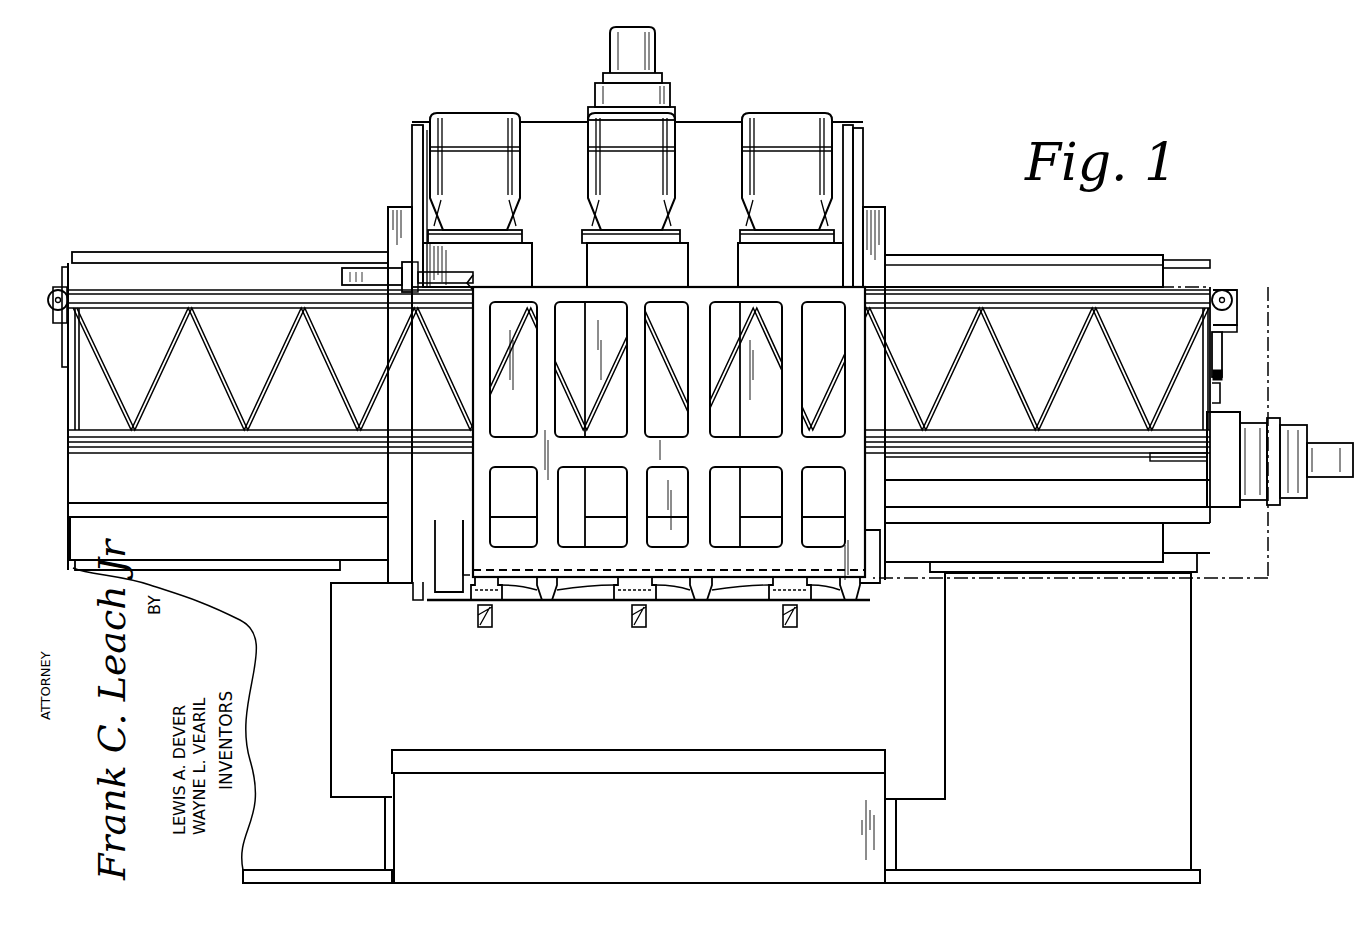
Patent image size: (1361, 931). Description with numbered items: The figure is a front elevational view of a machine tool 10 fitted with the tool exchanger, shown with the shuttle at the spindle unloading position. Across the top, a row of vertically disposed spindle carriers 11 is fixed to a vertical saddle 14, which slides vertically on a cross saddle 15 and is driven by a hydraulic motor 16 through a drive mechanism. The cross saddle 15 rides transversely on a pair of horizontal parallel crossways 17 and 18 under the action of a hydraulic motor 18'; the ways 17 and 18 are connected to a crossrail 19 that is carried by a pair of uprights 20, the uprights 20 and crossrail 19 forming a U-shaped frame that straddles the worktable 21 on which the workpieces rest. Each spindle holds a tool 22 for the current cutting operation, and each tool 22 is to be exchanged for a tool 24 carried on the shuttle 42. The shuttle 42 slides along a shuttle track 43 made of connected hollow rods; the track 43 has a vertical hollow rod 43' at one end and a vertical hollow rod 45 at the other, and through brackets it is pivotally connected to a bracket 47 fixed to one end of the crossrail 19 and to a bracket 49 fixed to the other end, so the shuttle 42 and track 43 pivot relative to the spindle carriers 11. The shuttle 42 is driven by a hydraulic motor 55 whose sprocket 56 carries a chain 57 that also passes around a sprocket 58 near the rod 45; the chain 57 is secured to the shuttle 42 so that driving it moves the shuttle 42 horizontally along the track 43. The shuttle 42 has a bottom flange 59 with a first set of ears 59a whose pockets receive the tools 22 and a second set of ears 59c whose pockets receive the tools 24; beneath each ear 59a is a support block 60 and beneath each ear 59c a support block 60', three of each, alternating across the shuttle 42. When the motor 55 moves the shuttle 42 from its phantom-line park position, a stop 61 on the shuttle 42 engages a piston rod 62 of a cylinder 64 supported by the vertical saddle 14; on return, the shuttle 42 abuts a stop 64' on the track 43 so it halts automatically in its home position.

The machine tool 10 is at (1102, 247).
The spindle carrier 11 is at (462, 118).
The vertical saddle 14 is at (546, 119).
The cross saddle 15 is at (888, 221).
The hydraulic motor 16 is at (612, 47).
The crossway 17 is at (938, 256).
The crossway 18 is at (1041, 547).
The hydraulic motor 18' is at (1296, 475).
The crossrail 19 is at (1195, 262).
The upright 20 is at (333, 665).
The worktable 21 is at (790, 750).
The tool 22 is at (486, 628).
The tool 24 is at (535, 603).
The shuttle 42 is at (559, 284).
The shuttle track 43 is at (1232, 374).
The vertical hollow rod 43' is at (1231, 445).
The vertical hollow rod 45 is at (72, 410).
The bracket 47 is at (1222, 347).
The bracket 49 is at (63, 350).
The hydraulic motor 55 is at (1235, 302).
The sprocket 56 is at (1224, 290).
The chain 57 is at (1230, 328).
The sprocket 58 is at (52, 288).
The bottom flange 59 is at (527, 570).
The ear 59a is at (493, 570).
The ear 59c is at (870, 565).
The support block 60 is at (624, 615).
The support block 60' is at (716, 609).
The stop 61 is at (477, 280).
The piston rod 62 is at (465, 308).
The cylinder 64 is at (371, 275).
The stop 64' is at (1046, 465).